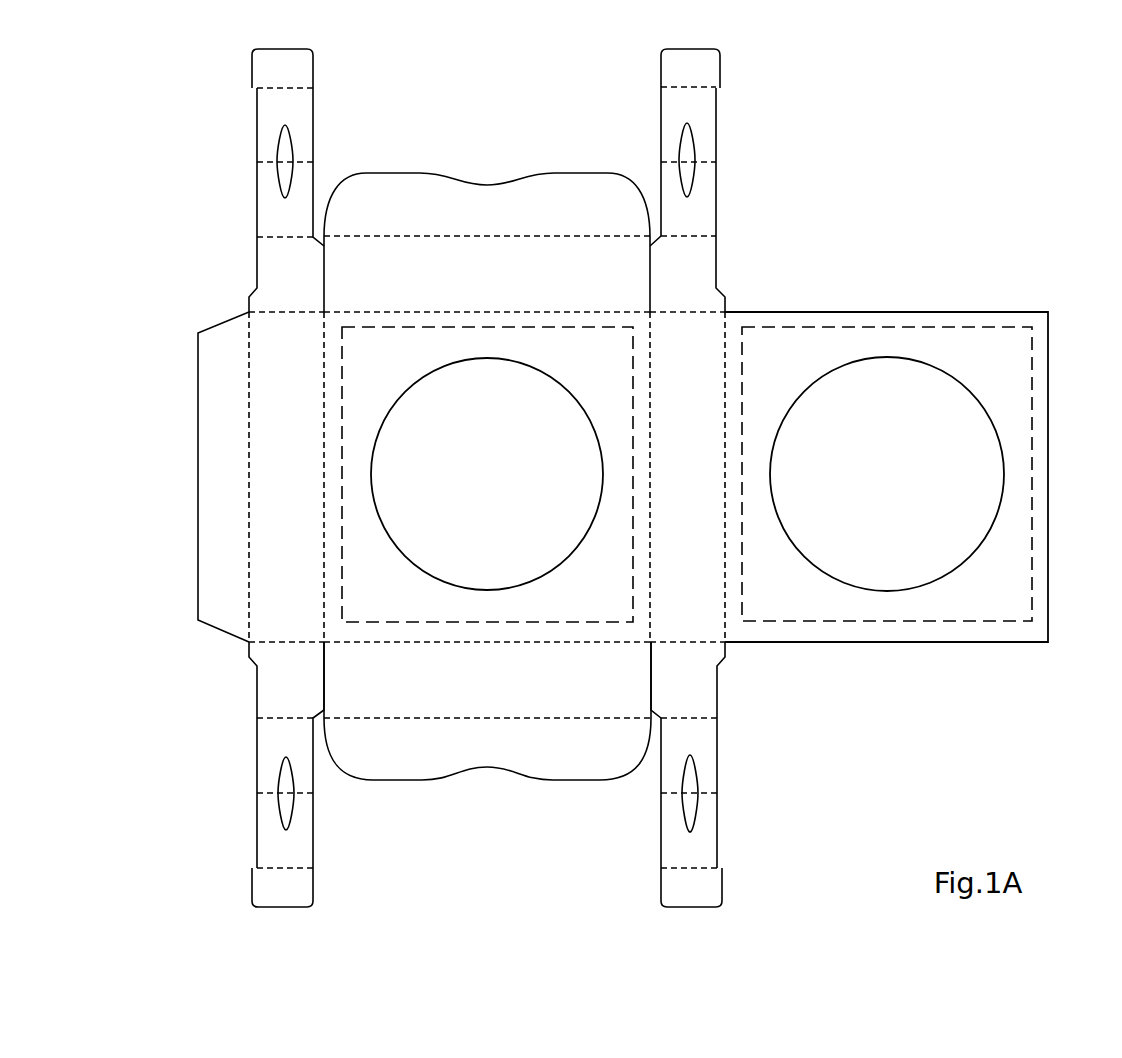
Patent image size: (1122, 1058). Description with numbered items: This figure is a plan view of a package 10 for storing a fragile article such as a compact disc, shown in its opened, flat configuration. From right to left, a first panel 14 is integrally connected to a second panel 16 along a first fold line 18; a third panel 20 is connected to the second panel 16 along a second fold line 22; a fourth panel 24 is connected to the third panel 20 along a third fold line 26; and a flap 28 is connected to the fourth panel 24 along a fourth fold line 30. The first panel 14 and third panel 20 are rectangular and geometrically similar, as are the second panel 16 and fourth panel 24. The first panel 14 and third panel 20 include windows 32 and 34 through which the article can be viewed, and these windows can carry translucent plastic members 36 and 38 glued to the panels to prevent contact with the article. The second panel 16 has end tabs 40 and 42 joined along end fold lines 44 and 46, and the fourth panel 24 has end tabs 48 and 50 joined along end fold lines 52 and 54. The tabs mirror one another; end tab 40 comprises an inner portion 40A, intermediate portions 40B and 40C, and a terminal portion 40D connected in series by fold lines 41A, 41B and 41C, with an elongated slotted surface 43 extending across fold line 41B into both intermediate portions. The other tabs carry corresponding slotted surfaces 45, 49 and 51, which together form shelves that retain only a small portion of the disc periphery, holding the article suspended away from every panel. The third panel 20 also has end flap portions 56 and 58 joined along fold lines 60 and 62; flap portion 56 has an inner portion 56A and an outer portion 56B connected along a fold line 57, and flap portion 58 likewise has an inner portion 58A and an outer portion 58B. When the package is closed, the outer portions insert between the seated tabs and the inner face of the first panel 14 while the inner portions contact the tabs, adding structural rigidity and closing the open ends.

The package 10 is at (978, 146).
The first panel 14 is at (910, 312).
The second panel 16 is at (695, 358).
The first fold line 18 is at (727, 397).
The third panel 20 is at (380, 345).
The second fold line 22 is at (647, 360).
The fourth panel 24 is at (204, 466).
The third fold line 26 is at (323, 387).
The flap 28 is at (212, 522).
The fourth fold line 30 is at (248, 567).
The window 32 is at (905, 468).
The window 34 is at (344, 607).
The translucent member 36 is at (897, 548).
The translucent member 38 is at (480, 530).
The end tab 40 is at (704, 180).
The inner portion 40A is at (687, 274).
The intermediate portion 40B is at (688, 199).
The intermediate portion 40C is at (688, 125).
The terminal portion 40D is at (690, 68).
The fold line 41A is at (702, 230).
The fold line 41B is at (697, 160).
The fold line 41C is at (718, 83).
The end tab 42 is at (768, 774).
The slotted surface 43 is at (683, 140).
The end fold line 44 is at (703, 310).
The slotted surface 45 is at (693, 798).
The end fold line 46 is at (698, 692).
The end tab 48 is at (214, 180).
The slotted surface 49 is at (290, 150).
The end tab 50 is at (208, 774).
The slotted surface 51 is at (288, 793).
The end fold line 52 is at (283, 311).
The end fold line 54 is at (290, 645).
The end flap portion 56 is at (487, 200).
The inner portion 56A is at (487, 274).
The outer portion 56B is at (487, 205).
The fold line 57 is at (483, 235).
The end flap portion 58 is at (487, 753).
The inner portion 58A is at (487, 680).
The outer portion 58B is at (487, 749).
The fold line 60 is at (430, 305).
The fold line 62 is at (512, 643).